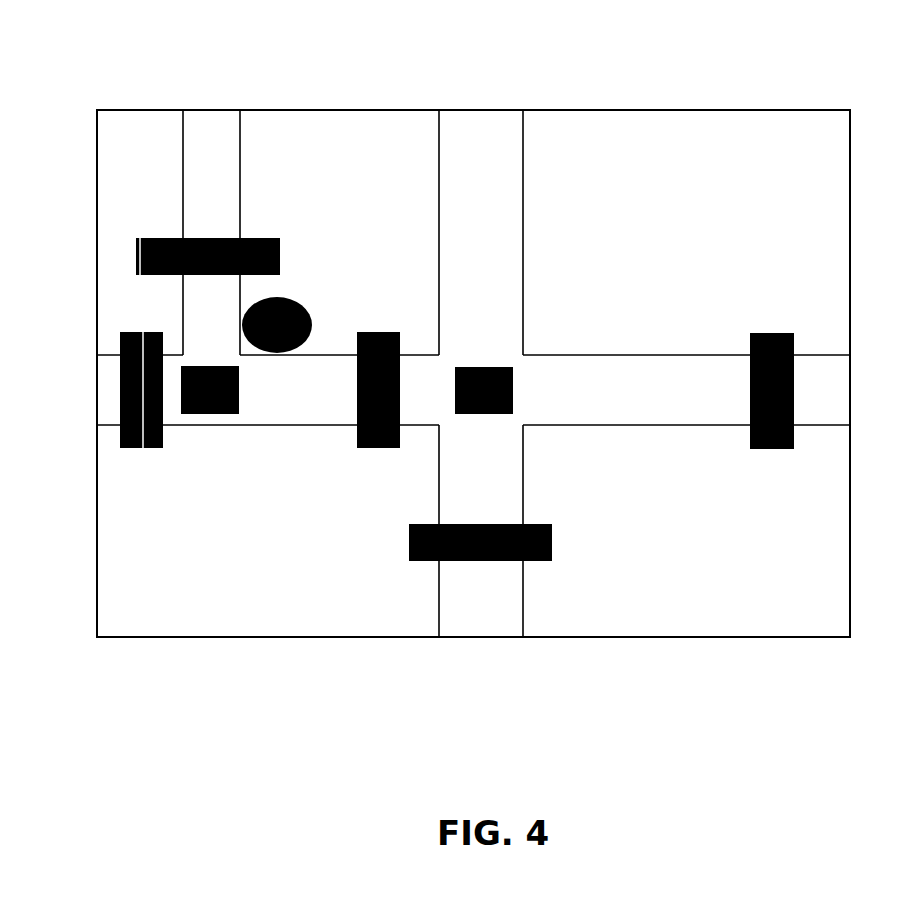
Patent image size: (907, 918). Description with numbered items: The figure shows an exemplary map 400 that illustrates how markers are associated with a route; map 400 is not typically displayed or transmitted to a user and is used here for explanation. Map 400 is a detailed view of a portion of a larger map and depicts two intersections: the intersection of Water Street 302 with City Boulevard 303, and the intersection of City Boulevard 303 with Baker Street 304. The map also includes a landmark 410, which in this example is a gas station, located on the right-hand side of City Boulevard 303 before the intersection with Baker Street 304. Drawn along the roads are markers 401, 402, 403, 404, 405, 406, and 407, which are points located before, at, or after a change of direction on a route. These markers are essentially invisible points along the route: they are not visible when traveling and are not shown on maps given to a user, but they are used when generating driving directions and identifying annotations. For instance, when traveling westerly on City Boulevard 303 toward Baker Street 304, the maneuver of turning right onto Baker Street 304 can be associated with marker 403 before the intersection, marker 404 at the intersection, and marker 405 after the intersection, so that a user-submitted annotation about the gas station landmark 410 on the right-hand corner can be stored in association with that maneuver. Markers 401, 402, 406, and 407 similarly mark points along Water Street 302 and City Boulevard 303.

The map 400 is at (780, 110).
The Water Street 302 is at (523, 617).
The City Boulevard 303 is at (600, 352).
The Baker Street 304 is at (240, 213).
The marker 401 is at (552, 542).
The marker 402 is at (513, 403).
The marker 403 is at (363, 448).
The marker 404 is at (203, 414).
The marker 405 is at (170, 238).
The marker 406 is at (148, 448).
The marker 407 is at (775, 449).
The landmark 410 is at (300, 305).